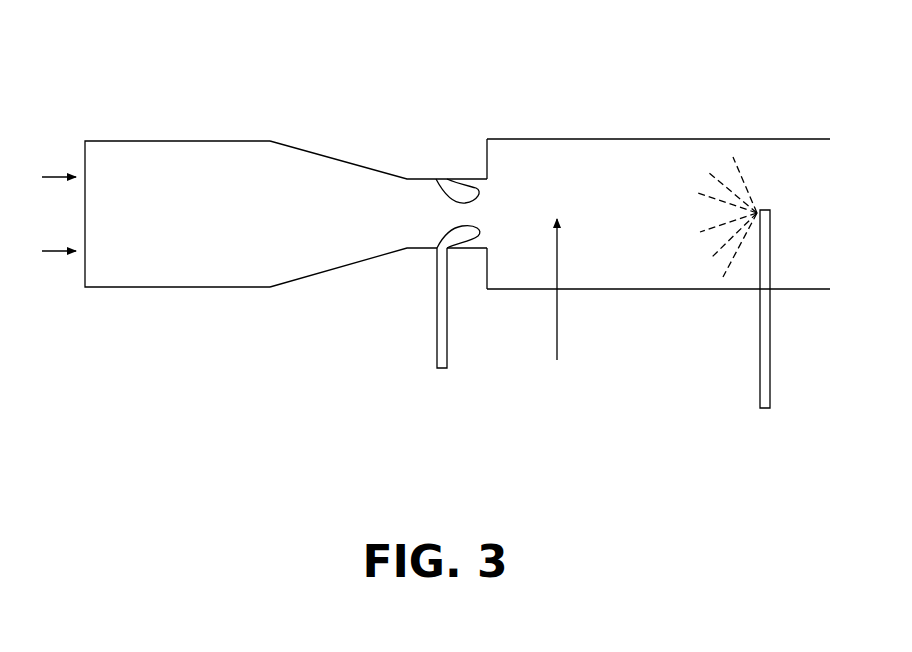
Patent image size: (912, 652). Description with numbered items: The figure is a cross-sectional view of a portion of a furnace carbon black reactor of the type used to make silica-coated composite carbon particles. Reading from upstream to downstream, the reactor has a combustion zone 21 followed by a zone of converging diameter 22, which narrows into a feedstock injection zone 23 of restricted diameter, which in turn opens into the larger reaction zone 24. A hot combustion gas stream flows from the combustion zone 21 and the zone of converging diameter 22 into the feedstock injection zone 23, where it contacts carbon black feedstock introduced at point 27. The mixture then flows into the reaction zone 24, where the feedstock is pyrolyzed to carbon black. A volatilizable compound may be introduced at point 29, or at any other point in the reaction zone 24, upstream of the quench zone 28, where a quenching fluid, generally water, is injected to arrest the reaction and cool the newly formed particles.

The combustion zone 21 is at (121, 224).
The zone of converging diameter 22 is at (322, 224).
The feedstock injection zone 23 is at (424, 224).
The reaction zone 24 is at (619, 224).
The feedstock introduction point 27 is at (434, 253).
The quench zone 28 is at (766, 209).
The volatilizable compound introduction point 29 is at (556, 303).